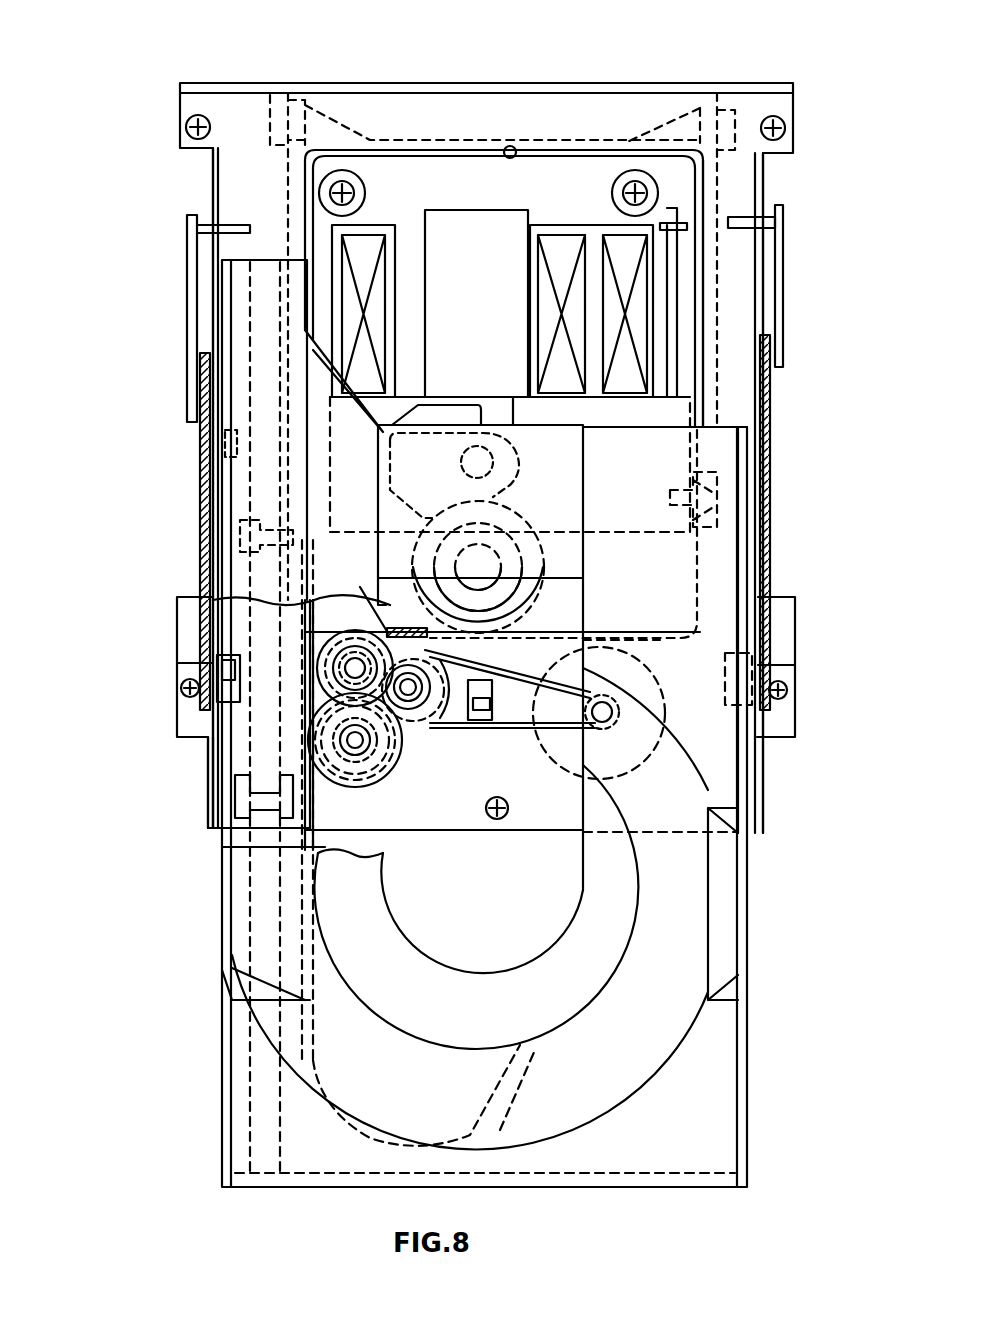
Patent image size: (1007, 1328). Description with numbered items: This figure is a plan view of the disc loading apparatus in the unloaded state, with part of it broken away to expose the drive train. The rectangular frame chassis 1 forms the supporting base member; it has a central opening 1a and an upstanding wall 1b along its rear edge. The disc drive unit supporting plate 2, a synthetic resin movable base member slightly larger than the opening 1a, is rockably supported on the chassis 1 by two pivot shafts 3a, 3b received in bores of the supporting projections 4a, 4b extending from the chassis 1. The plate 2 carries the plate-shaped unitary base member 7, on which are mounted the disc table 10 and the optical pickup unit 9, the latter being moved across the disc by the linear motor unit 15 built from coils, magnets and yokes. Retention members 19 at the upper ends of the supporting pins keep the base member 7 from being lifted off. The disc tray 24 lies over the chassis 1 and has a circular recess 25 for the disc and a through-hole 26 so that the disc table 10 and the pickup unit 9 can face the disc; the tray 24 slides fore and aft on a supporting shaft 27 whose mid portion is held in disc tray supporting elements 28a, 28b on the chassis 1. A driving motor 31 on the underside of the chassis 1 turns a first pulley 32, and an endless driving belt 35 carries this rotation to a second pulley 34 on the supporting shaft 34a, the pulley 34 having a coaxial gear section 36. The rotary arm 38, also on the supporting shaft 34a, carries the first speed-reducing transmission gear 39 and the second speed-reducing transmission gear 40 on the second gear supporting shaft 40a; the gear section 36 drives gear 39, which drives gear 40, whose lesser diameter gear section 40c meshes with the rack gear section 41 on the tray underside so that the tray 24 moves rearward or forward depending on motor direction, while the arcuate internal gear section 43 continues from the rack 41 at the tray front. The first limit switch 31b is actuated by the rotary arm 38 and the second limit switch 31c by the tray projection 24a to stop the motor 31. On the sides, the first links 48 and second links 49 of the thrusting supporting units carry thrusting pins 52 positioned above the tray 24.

The chassis 1 is at (598, 100).
The central opening 1a is at (510, 146).
The upstanding wall 1b is at (455, 93).
The disc drive unit supporting plate 2 is at (717, 268).
The pivot shaft 3a is at (288, 95).
The pivot shaft 3b is at (716, 95).
The supporting projection 4a is at (268, 118).
The supporting projection 4b is at (735, 128).
The unitary base member 7 is at (555, 175).
The optical pickup unit 9 is at (440, 405).
The disc table 10 is at (512, 425).
The linear motor unit 15 is at (400, 275).
The retention member 19 is at (318, 196).
The disc tray 24 is at (230, 1150).
The projection 24a is at (230, 435).
The circular recess 25 is at (615, 1105).
The through-hole 26 is at (400, 945).
The supporting shaft 27 is at (243, 797).
The disc tray supporting element 28a is at (237, 785).
The disc tray supporting element 28b is at (250, 520).
The driving motor 31 is at (640, 665).
The first limit switch 31b is at (482, 705).
The second limit switch 31c is at (207, 740).
The first pulley 32 is at (610, 720).
The second pulley 34 is at (432, 705).
The supporting shaft 34a is at (400, 672).
The endless driving belt 35 is at (521, 798).
The gear section 36 is at (462, 660).
The rotary arm 38 is at (350, 762).
The first speed-reducing transmission gear 39 is at (335, 655).
The second speed-reducing transmission gear 40 is at (350, 770).
The second gear supporting shaft 40a is at (385, 760).
The lesser diameter gear section 40c is at (372, 762).
The rack gear section 41 is at (300, 660).
The arcuate internal gear section 43 is at (315, 1068).
The first link 48 is at (200, 452).
The second link 49 is at (188, 412).
The thrusting pin 52 is at (238, 233).